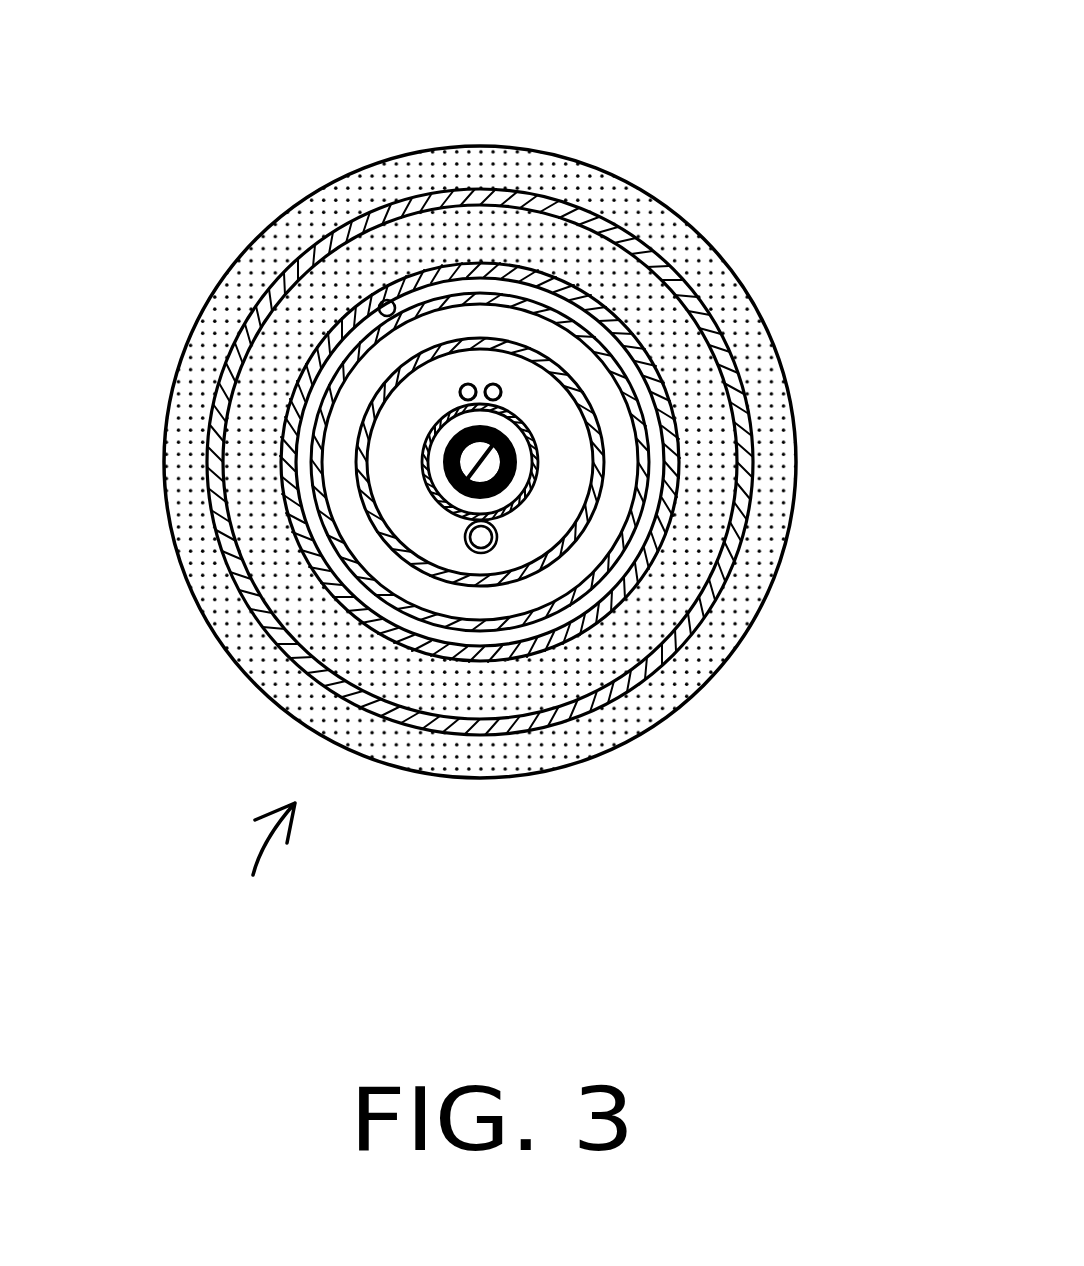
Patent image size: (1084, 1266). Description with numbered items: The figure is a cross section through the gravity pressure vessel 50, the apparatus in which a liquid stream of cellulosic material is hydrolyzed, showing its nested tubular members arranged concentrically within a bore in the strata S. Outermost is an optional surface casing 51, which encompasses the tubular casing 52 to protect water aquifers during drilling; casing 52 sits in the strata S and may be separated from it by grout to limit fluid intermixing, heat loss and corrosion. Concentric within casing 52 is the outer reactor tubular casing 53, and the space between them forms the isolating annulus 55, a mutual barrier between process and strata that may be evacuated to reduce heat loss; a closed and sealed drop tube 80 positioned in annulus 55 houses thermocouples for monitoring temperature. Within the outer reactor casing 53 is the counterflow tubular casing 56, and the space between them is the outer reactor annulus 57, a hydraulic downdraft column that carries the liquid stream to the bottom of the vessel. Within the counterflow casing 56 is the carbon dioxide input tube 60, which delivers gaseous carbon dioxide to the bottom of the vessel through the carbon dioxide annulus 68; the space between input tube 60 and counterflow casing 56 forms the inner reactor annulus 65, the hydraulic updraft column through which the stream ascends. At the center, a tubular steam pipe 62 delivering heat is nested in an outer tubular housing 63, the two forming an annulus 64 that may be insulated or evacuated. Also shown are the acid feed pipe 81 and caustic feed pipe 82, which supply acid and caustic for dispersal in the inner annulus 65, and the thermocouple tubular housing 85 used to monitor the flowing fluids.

The gravity pressure vessel 50 is at (236, 878).
The surface casing 51 is at (747, 532).
The tubular casing 52 is at (683, 483).
The outer reactor tubular casing 53 is at (647, 422).
The isolating annulus 55 is at (520, 288).
The counterflow tubular casing 56 is at (583, 550).
The outer reactor annulus 57 is at (588, 383).
The carbon dioxide input tube 60 is at (520, 420).
The tubular steam pipe 62 is at (455, 517).
The outer tubular housing 63 is at (437, 460).
The annulus 64 is at (447, 485).
The inner reactor annulus 65 is at (390, 403).
The carbon dioxide annulus 68 is at (522, 477).
The drop tube 80 is at (380, 302).
The acid feed pipe 81 is at (470, 383).
The caustic feed pipe 82 is at (469, 550).
The thermocouple tubular housing 85 is at (496, 384).
The strata S is at (643, 727).